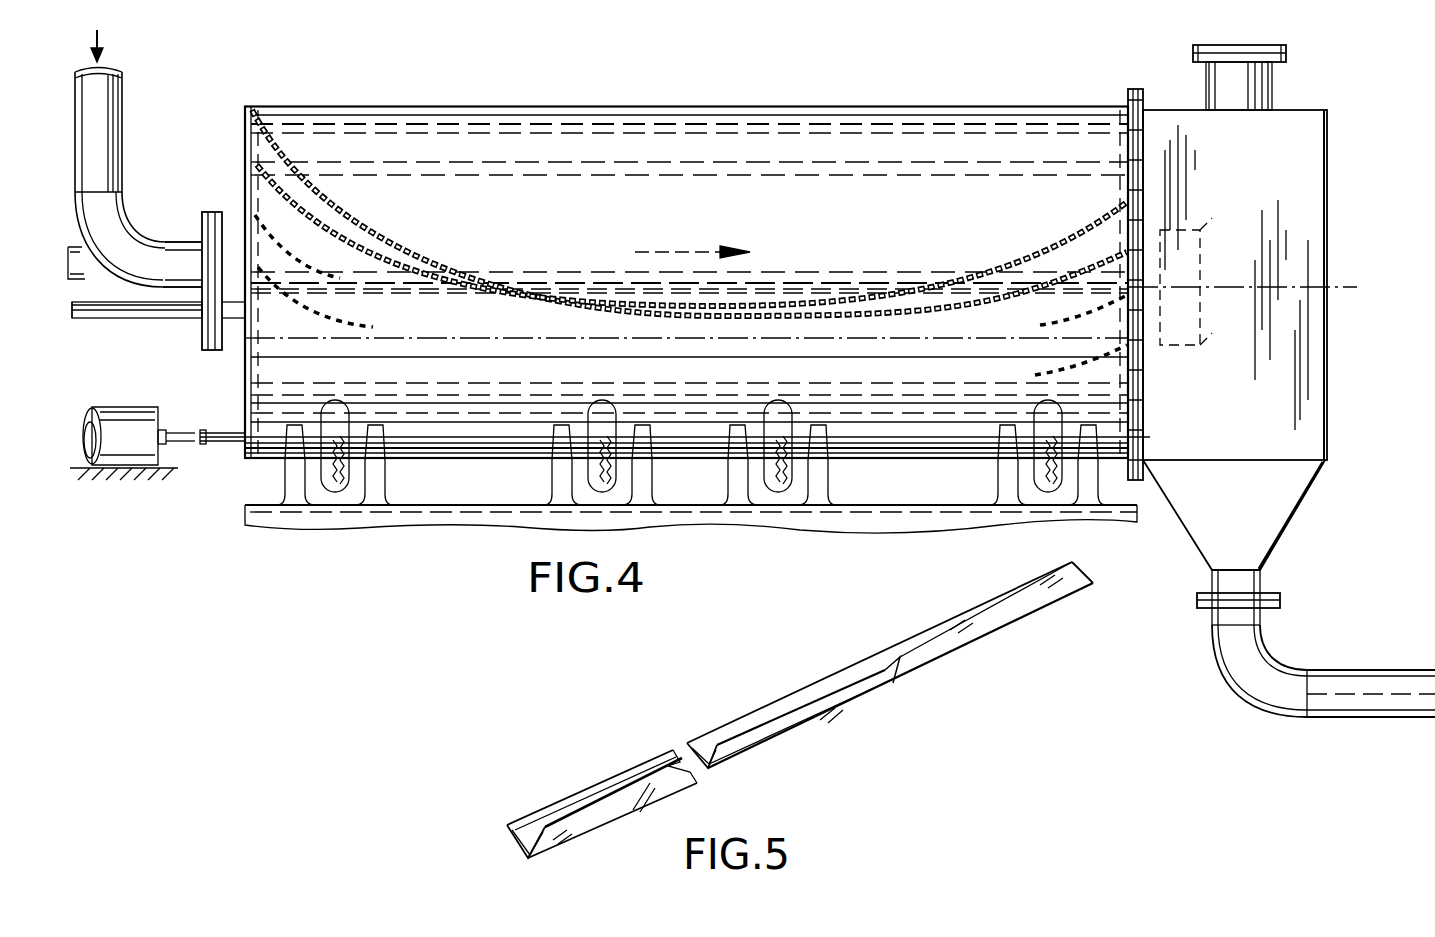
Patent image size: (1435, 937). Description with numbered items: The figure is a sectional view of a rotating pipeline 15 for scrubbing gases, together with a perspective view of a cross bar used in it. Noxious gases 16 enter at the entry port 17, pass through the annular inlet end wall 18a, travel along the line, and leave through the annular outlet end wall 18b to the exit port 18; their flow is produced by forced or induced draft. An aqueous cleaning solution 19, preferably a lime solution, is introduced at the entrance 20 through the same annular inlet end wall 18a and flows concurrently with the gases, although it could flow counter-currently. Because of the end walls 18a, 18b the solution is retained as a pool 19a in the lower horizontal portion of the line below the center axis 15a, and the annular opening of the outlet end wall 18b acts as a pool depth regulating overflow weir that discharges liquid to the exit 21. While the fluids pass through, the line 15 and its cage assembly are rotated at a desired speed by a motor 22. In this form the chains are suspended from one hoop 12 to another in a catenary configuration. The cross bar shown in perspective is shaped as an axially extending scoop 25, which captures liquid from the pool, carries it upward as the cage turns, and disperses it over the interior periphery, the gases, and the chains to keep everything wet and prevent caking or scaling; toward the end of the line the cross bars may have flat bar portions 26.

In FIG. 4, the hoop 12 is at (245, 138).
In FIG. 4, the pipeline 15 is at (448, 104).
In FIG. 4, the center axis 15a is at (820, 276).
In FIG. 4, the noxious gases 16 is at (102, 46).
In FIG. 4, the entry port 17 is at (122, 84).
In FIG. 4, the exit port 18 is at (1200, 246).
In FIG. 4, the annular inlet end wall 18a is at (250, 220).
In FIG. 4, the annular outlet end wall 18b is at (1143, 232).
In FIG. 4, the aqueous cleaning solution 19 is at (60, 306).
In FIG. 4, the pool 19a is at (850, 342).
In FIG. 4, the entrance 20 is at (148, 318).
In FIG. 4, the exit 21 is at (1142, 434).
In FIG. 4, the motor 22 is at (130, 480).
In FIG. 5, the scoop 25 is at (770, 742).
In FIG. 5, the flat bar portions 26 is at (975, 648).